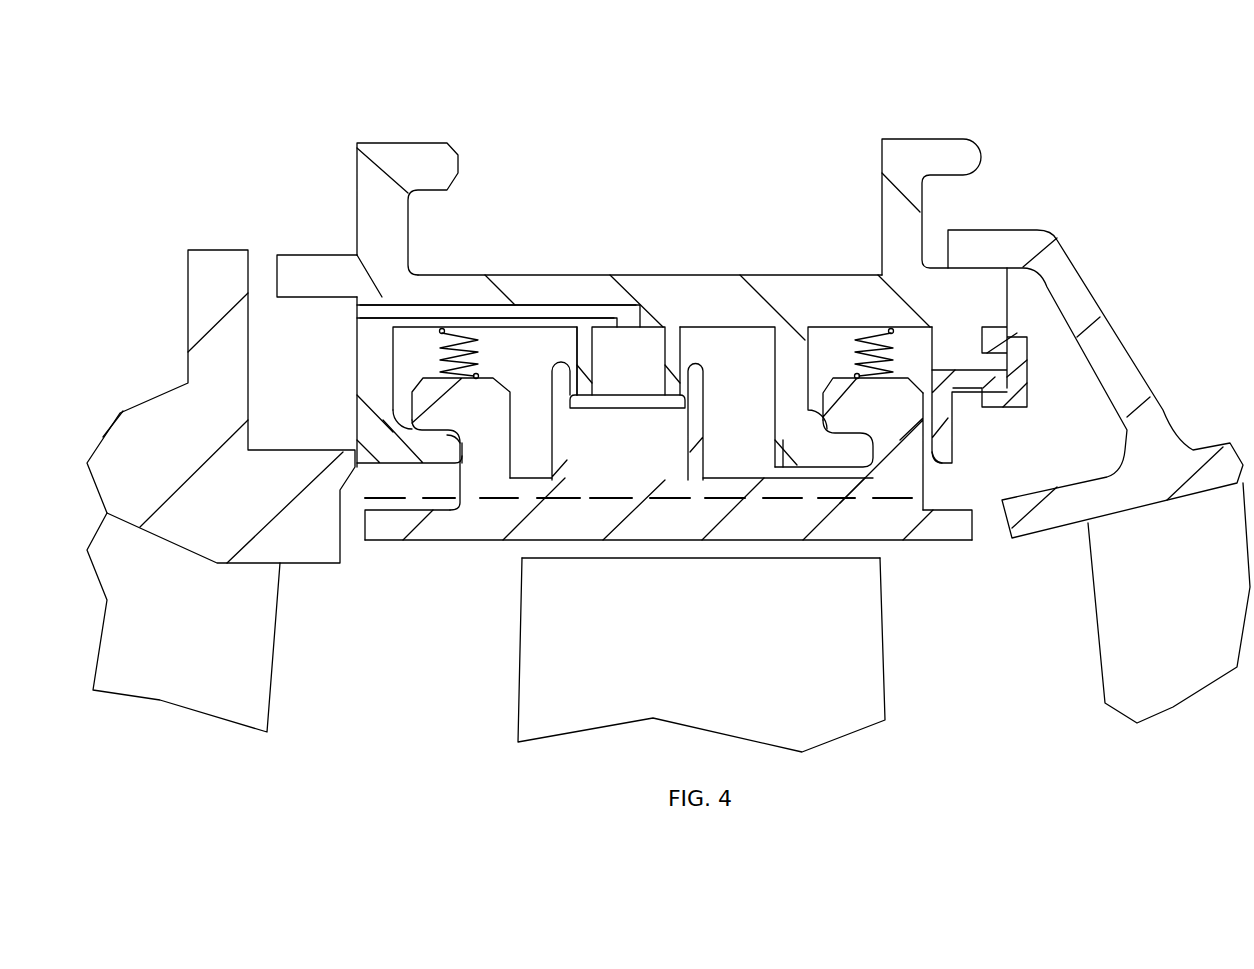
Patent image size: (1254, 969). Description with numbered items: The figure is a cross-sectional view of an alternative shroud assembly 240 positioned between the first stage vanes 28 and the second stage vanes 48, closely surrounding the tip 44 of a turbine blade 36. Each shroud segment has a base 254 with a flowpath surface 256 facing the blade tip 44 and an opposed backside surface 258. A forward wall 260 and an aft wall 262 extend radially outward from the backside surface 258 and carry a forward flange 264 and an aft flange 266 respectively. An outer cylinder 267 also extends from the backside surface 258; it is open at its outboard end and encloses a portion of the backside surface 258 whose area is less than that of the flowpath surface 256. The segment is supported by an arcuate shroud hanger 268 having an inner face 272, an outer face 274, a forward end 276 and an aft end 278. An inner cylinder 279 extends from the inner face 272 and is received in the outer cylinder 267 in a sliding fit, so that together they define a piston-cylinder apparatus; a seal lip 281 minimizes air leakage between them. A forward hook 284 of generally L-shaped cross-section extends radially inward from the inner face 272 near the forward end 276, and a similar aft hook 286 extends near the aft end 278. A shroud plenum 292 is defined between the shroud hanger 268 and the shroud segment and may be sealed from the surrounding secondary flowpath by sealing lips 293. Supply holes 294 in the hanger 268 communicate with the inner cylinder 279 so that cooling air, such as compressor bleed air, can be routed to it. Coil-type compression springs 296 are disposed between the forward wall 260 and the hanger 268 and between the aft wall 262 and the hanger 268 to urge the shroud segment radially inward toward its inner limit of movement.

The shroud assembly 240 is at (992, 66).
The shroud hanger 268 is at (340, 226).
The outer face 274 is at (793, 265).
The forward end 276 is at (334, 291).
The aft end 278 is at (1003, 318).
The supply hole 294 is at (356, 316).
The shroud plenum 292 is at (502, 355).
The spring 296 is at (444, 332).
The forward flange 264 is at (420, 401).
The aft flange 266 is at (877, 419).
The forward wall 260 is at (500, 438).
The backside surface 258 is at (730, 466).
The forward hook 284 is at (378, 445).
The aft hook 286 is at (785, 405).
The outer cylinder 267 is at (558, 382).
The seal lip 281 is at (686, 408).
The inner cylinder 279 is at (676, 343).
The inner face 272 is at (755, 338).
The aft wall 262 is at (913, 487).
The sealing lip 293 is at (457, 465).
The base 254 is at (377, 535).
The flowpath surface 256 is at (454, 552).
The tip 44 is at (527, 556).
The first stage vane 28 is at (195, 631).
The turbine blade 36 is at (680, 634).
The second stage vane 48 is at (1128, 612).